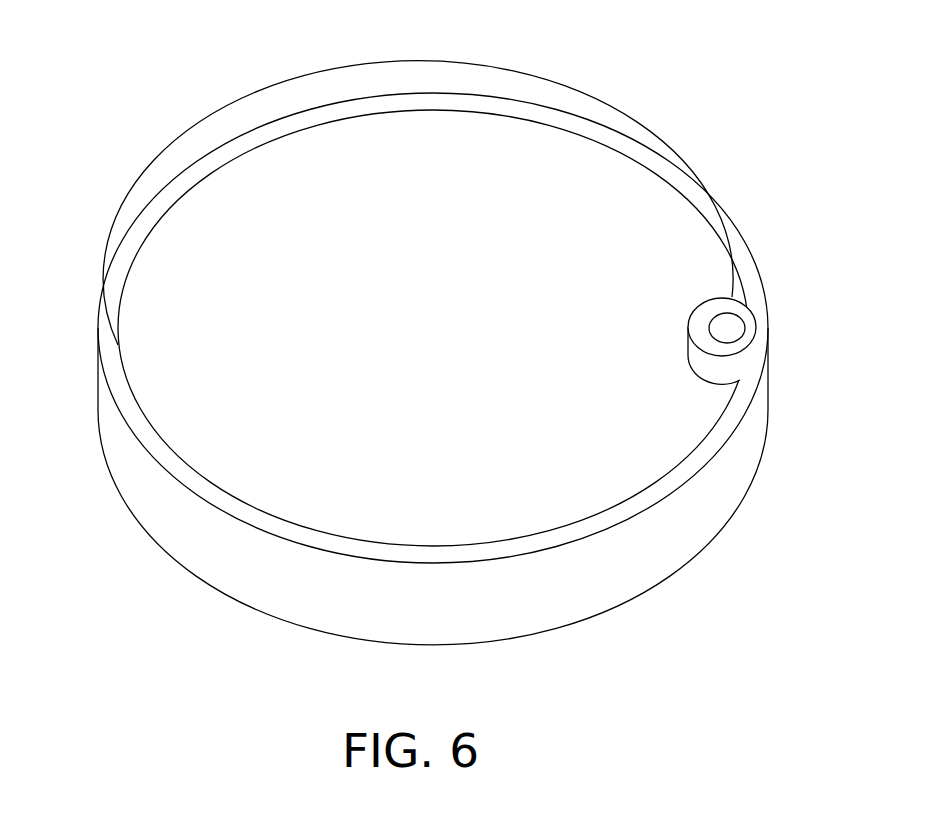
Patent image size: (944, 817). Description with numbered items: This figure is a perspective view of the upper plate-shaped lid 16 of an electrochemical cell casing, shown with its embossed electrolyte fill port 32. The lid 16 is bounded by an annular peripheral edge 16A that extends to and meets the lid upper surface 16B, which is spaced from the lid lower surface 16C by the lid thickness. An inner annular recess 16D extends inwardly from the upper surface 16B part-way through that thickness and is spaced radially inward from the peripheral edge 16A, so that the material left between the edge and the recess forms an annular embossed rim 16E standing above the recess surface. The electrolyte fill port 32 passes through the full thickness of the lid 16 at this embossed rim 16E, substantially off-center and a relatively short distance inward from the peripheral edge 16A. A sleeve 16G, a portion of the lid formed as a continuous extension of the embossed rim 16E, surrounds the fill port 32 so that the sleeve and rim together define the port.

The lid 16 is at (445, 333).
The annular peripheral edge 16A is at (745, 447).
The lid upper surface 16B is at (102, 316).
The lid lower surface 16C is at (645, 593).
The inner annular recess 16D is at (645, 213).
The annular embossed rim 16E is at (485, 97).
The sleeve 16G is at (690, 328).
The electrolyte fill port 32 is at (728, 325).